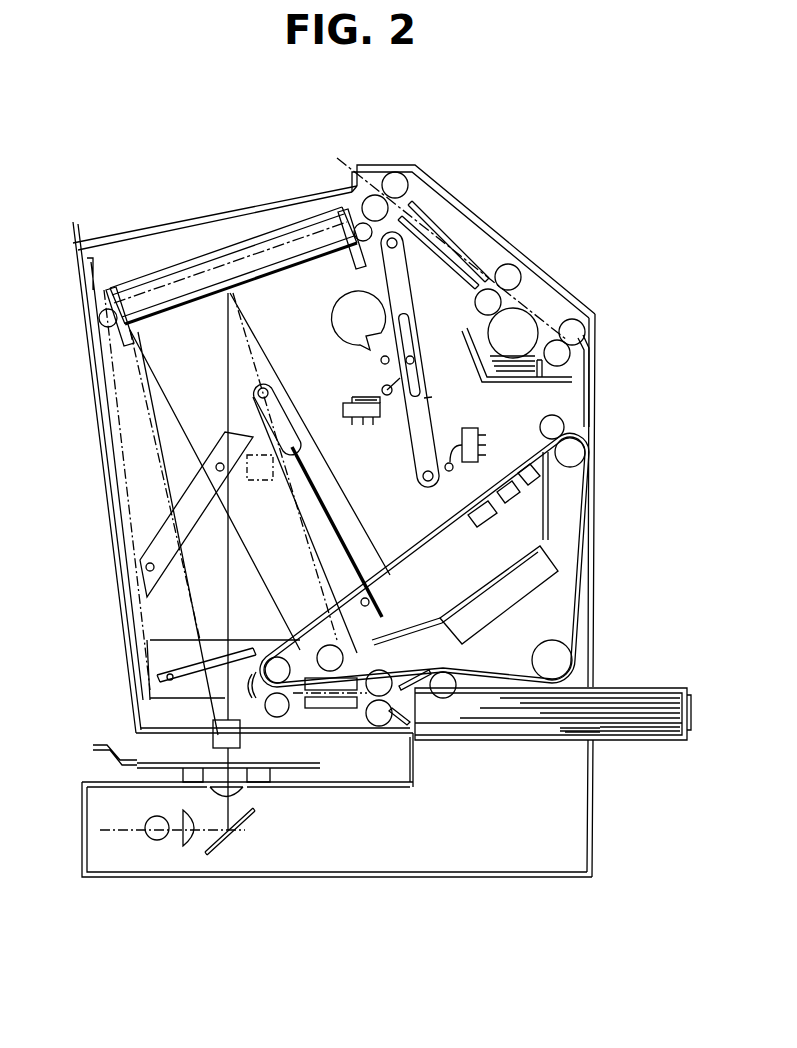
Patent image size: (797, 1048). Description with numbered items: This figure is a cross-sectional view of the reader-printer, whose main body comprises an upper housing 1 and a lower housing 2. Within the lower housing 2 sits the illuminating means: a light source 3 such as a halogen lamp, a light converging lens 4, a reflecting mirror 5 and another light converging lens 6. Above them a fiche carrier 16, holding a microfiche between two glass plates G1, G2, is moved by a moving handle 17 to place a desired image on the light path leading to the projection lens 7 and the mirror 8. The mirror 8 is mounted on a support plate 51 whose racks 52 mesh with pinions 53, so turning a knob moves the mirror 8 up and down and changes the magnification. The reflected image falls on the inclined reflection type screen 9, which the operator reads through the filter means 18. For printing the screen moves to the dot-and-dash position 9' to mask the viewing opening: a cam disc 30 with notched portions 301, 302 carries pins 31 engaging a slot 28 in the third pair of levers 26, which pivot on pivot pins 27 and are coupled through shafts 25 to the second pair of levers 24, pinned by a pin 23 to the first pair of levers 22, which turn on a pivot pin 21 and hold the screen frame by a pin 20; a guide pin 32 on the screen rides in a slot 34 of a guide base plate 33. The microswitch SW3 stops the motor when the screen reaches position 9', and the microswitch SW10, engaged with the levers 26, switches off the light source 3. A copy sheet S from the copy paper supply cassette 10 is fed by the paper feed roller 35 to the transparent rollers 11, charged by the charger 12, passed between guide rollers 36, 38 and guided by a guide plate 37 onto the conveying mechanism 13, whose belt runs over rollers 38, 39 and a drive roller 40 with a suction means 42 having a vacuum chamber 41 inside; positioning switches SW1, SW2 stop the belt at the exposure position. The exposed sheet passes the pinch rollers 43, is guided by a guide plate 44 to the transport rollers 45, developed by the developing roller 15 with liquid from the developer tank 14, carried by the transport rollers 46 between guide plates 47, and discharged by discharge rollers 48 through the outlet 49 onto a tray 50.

The upper housing 1 is at (494, 224).
The lower housing 2 is at (386, 878).
The light source 3 is at (152, 832).
The light converging lens 4 is at (188, 842).
The reflecting mirror 5 is at (218, 838).
The light converging lens 6 is at (236, 793).
The projection lens 7 is at (241, 740).
The mirror 8 is at (277, 277).
The reflection type screen 9 is at (293, 514).
The screen masking position 9' is at (101, 479).
The copy paper supply cassette 10 is at (633, 688).
The transparent rollers 11 is at (383, 700).
The charger 12 is at (379, 670).
The copy paper conveying mechanism 13 is at (590, 511).
The developer tank 14 is at (520, 383).
The developing roller 15 is at (518, 330).
The fiche carrier 16 is at (152, 745).
The moving handle 17 is at (106, 745).
The filter means 18 is at (112, 550).
The pin 20 is at (370, 600).
The pivot pin 21 is at (260, 386).
The first pair of levers 22 is at (330, 553).
The pin 23 is at (292, 478).
The second pair of levers 24 is at (363, 478).
The shafts 25 is at (424, 480).
The third pair of levers 26 is at (428, 418).
The pivot pins 27 is at (404, 296).
The slot 28 is at (432, 397).
The cam disc 30 is at (365, 352).
The notched portion 301 is at (389, 396).
The notched portion 302 is at (392, 300).
The pins 31 is at (418, 352).
The guide pin 32 is at (296, 643).
The guide base plate 33 is at (216, 635).
The slot 34 is at (195, 678).
The paper feed roller 35 is at (448, 674).
The guide roller 36 is at (283, 712).
The guide plate 37 is at (250, 663).
The guide roller 38 is at (277, 657).
The roller 39 is at (572, 452).
The drive roller 40 is at (553, 655).
The vacuum chamber 41 is at (538, 508).
The suction means 42 is at (541, 520).
The pinch rollers 43 is at (548, 417).
The guide plate 44 is at (592, 366).
The transport rollers 45 is at (573, 325).
The transport rollers 46 is at (512, 277).
The guide plates 47 is at (452, 233).
The discharge rollers 48 is at (377, 195).
The outlet 49 is at (358, 168).
The tray 50 is at (213, 213).
The support plate 51 is at (190, 290).
The racks 52 is at (117, 298).
The pinions 53 is at (99, 318).
The copy sheet S is at (605, 708).
The glass plate G1 is at (320, 765).
The glass plate G2 is at (322, 772).
The positioning switch SW1 is at (504, 502).
The positioning switch SW2 is at (478, 527).
The microswitch SW3 is at (345, 403).
The microswitch SW10 is at (504, 445).